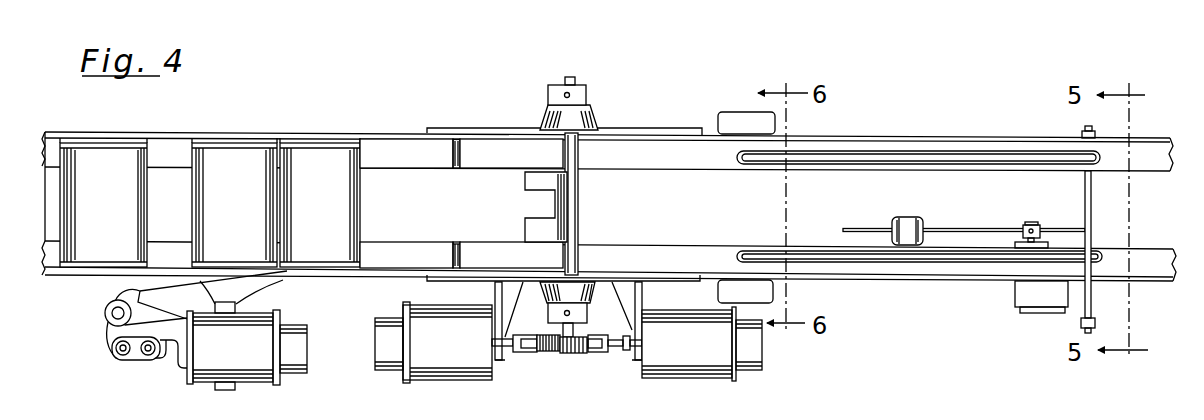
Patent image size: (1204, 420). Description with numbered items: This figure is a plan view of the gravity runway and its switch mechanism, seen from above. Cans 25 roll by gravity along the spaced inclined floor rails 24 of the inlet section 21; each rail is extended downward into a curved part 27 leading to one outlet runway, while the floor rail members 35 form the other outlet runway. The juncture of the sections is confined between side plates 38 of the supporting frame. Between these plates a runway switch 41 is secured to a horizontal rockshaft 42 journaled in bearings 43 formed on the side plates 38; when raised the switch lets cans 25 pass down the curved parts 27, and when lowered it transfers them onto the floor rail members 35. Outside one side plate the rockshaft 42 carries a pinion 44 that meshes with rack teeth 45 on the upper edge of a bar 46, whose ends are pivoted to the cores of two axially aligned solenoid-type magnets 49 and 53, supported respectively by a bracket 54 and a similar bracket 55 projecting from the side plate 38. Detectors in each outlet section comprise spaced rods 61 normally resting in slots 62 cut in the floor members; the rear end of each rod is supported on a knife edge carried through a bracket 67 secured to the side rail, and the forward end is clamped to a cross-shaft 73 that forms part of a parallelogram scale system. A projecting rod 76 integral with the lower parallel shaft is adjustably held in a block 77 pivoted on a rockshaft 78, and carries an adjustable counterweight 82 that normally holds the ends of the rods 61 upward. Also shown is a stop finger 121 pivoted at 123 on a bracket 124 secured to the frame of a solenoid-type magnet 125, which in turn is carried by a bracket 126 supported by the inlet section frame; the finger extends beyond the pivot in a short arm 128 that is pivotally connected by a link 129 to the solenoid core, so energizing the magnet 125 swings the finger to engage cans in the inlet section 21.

The inlet section 21 is at (165, 147).
The floor rails 24 is at (407, 246).
The cans 25 is at (352, 201).
The curved part 27 is at (485, 245).
The floor rail members 35 is at (1147, 147).
The side plates 38 is at (498, 129).
The runway switch 41 is at (545, 183).
The horizontal rockshaft 42 is at (578, 156).
The bearings 43 is at (593, 122).
The pinion 44 is at (577, 353).
The rack teeth 45 is at (546, 352).
The bar 46 is at (535, 352).
The magnet 49 is at (673, 376).
The magnet 53 is at (437, 373).
The bracket 54 is at (643, 294).
The bracket 55 is at (495, 292).
The rods 61 is at (917, 156).
The slots 62 is at (857, 153).
The bracket 67 is at (727, 117).
The cross-shaft 73 is at (1091, 195).
The projecting rod 76 is at (950, 228).
The block 77 is at (1040, 224).
The rockshaft 78 is at (1030, 224).
The counterweight 82 is at (907, 217).
The stop finger 121 is at (200, 298).
The pivot 123 is at (110, 306).
The bracket 124 is at (149, 341).
The magnet 125 is at (260, 378).
The bracket 126 is at (237, 293).
The short arm 128 is at (115, 333).
The link 129 is at (137, 357).